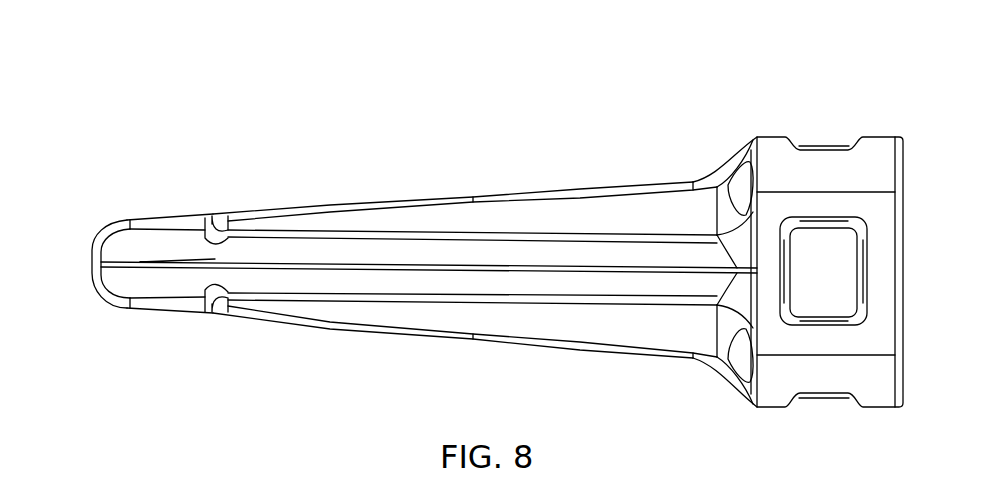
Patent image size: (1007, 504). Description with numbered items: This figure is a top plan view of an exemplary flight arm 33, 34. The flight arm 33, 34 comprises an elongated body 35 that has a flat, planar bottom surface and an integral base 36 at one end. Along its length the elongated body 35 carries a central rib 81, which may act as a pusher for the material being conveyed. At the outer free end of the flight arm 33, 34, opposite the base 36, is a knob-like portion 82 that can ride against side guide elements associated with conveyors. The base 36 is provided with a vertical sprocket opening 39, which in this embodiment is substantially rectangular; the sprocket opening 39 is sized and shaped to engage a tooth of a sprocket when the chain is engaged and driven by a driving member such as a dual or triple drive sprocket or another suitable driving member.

The knob-like portion 82 is at (140, 208).
The elongated body 35 is at (333, 173).
The flight arm 33 is at (429, 178).
The flight arm 34 is at (520, 163).
The central rib 81 is at (472, 253).
The base 36 is at (867, 118).
The sprocket opening 39 is at (847, 277).